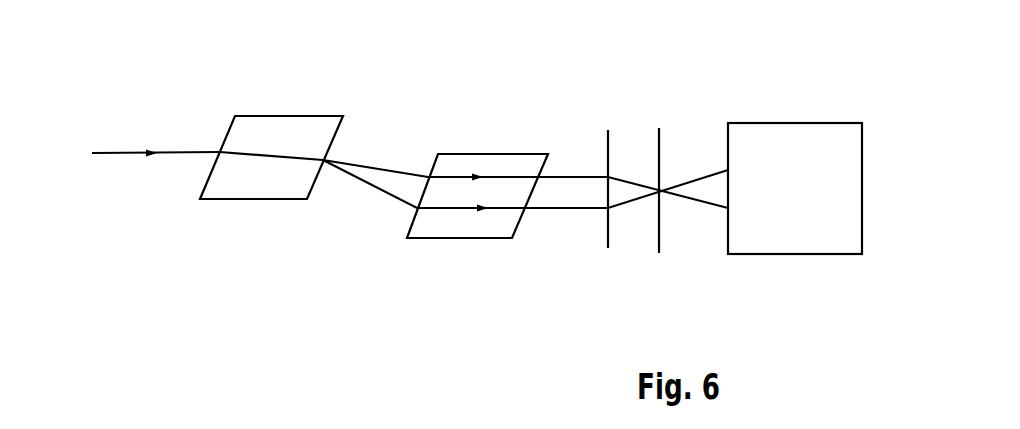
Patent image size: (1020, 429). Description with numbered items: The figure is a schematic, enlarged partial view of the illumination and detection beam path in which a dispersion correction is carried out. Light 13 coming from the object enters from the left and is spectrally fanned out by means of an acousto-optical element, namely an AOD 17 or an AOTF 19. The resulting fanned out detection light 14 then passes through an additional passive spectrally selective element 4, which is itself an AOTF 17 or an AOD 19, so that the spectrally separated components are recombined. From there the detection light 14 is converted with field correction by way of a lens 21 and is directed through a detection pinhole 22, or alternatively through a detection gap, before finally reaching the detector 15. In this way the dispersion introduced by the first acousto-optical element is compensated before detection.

The passive spectrally selective element 4 is at (382, 119).
The light coming from the object 13 is at (185, 157).
The fanned out detection light 14 is at (385, 178).
The detector 15 is at (805, 255).
The AOD 17 is at (312, 115).
The AOTF 19 is at (374, 177).
The lens 21 is at (608, 155).
The detection pinhole 22 is at (660, 147).